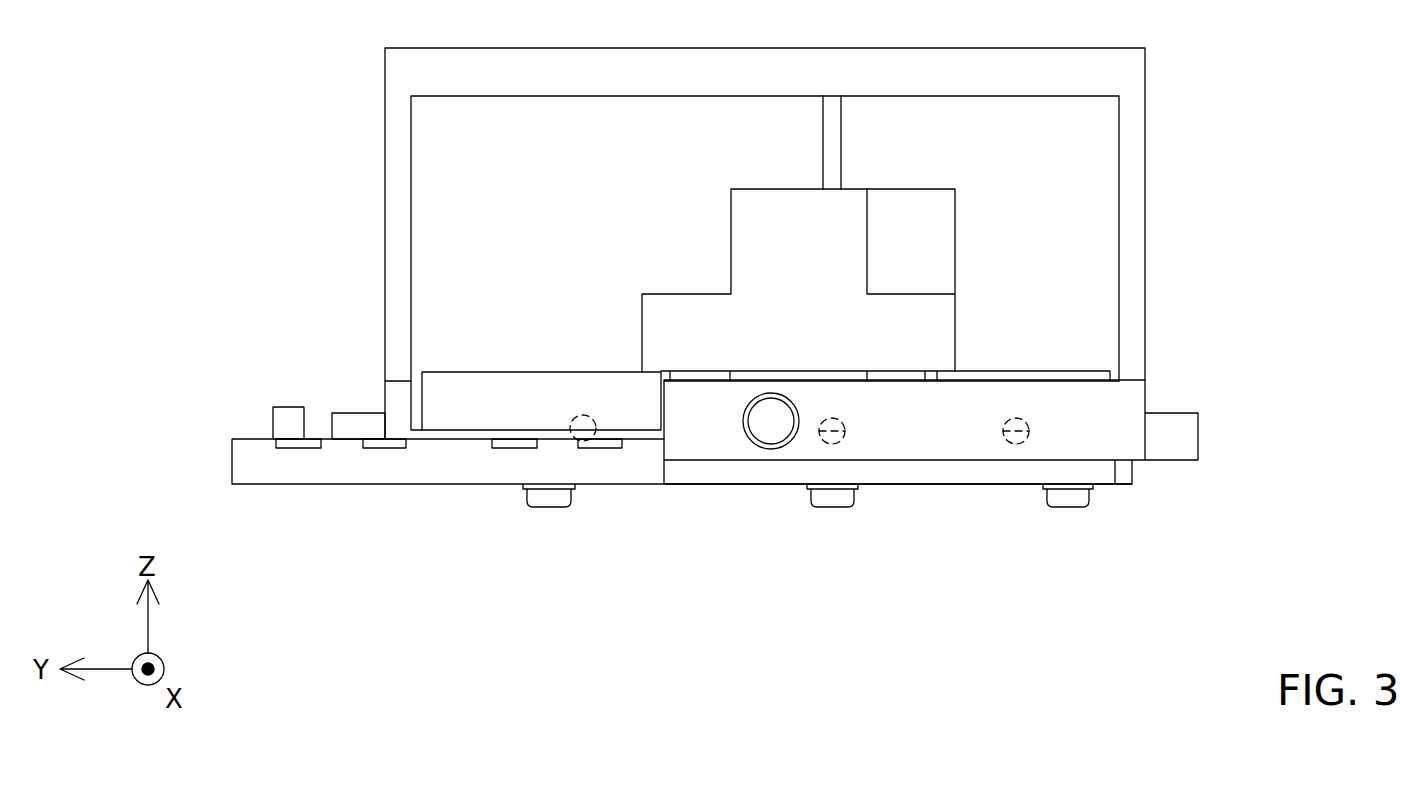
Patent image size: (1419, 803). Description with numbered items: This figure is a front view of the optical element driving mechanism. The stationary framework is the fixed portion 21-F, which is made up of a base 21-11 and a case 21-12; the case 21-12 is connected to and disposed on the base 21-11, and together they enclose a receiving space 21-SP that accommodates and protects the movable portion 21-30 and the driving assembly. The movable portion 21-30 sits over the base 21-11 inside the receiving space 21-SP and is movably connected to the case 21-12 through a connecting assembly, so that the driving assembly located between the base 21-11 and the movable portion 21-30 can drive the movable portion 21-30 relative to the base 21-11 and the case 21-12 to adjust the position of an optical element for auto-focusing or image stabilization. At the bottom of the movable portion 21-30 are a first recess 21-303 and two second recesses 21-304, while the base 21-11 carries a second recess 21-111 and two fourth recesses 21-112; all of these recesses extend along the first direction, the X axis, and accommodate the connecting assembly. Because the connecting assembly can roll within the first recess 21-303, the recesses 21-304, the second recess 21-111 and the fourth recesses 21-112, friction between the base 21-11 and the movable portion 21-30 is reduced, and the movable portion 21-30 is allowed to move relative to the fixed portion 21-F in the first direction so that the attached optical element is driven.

The fixed portion 21-F is at (124, 288).
The base 21-11 is at (278, 465).
The case 21-12 is at (397, 300).
The receiving space 21-SP is at (441, 177).
The movable portion 21-30 is at (810, 320).
The first recess 21-303 is at (810, 428).
The second recesses 21-304 is at (570, 431).
The second recess 21-111 is at (830, 444).
The fourth recesses 21-112 is at (575, 440).